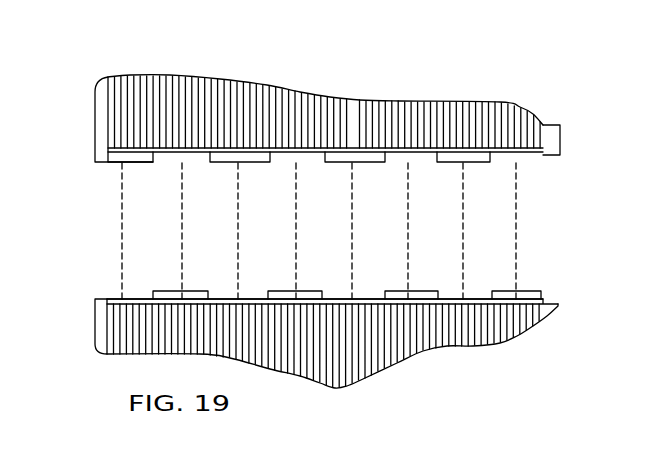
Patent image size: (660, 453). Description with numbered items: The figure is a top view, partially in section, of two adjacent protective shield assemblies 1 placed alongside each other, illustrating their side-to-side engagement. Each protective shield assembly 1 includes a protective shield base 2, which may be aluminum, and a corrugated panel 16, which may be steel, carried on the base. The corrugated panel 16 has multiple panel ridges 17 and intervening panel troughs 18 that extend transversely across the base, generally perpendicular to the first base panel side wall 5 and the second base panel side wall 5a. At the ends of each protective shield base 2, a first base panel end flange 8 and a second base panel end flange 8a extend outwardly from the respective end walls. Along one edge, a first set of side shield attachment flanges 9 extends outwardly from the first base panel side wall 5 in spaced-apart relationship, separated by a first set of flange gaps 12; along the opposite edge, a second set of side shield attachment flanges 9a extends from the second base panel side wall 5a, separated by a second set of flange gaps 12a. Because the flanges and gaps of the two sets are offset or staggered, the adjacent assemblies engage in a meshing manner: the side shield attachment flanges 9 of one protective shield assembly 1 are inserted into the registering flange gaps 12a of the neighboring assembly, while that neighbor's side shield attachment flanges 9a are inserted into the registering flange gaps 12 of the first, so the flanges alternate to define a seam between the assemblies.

The protective shield assembly 1 is at (527, 97).
The protective shield base 2 is at (95, 127).
The first base panel side wall 5 is at (520, 298).
The second base panel side wall 5a is at (518, 156).
The first base panel end flange 8 is at (100, 107).
The second base panel end flange 8a is at (560, 137).
The side shield attachment flanges 9 is at (197, 290).
The side shield attachment flanges 9a is at (105, 163).
The flange gaps 12 is at (105, 289).
The flange gaps 12a is at (165, 163).
The corrugated panel 16 is at (163, 75).
The panel ridges 17 is at (352, 102).
The panel troughs 18 is at (453, 102).